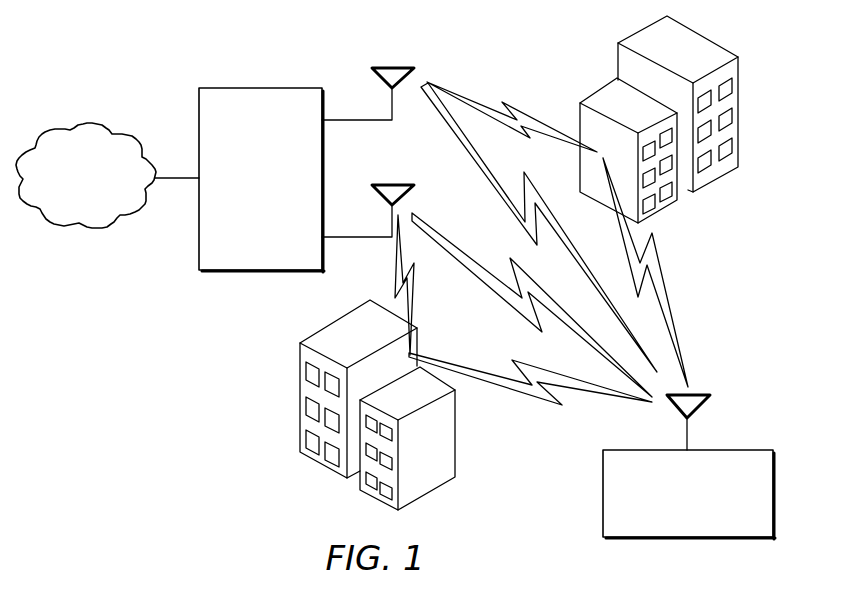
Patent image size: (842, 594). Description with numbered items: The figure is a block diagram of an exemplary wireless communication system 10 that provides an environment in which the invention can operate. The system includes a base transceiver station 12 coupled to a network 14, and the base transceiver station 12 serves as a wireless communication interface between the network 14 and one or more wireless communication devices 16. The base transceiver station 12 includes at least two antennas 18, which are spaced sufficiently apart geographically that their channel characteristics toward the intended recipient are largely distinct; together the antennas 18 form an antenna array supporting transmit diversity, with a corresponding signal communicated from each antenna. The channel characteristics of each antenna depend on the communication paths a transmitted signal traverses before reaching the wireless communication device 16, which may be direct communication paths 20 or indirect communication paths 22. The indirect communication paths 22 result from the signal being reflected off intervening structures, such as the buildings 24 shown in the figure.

The wireless communication system 10 is at (80, 66).
The base transceiver station 12 is at (260, 87).
The network 14 is at (80, 121).
The wireless communication device 16 is at (603, 493).
The antennas 18 is at (391, 67).
The direct communication path 20 is at (480, 167).
The indirect communication path 22 is at (521, 392).
The buildings 24 is at (707, 38).